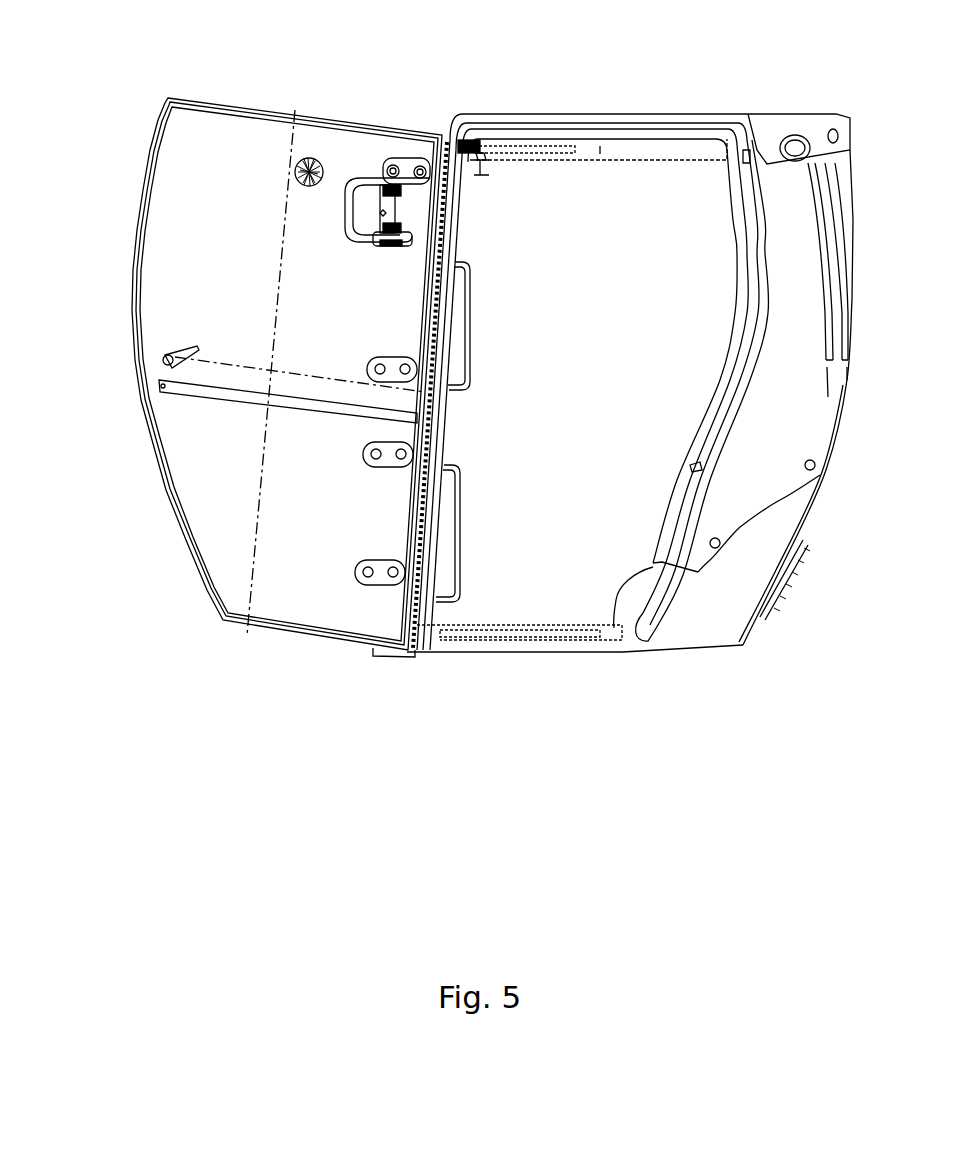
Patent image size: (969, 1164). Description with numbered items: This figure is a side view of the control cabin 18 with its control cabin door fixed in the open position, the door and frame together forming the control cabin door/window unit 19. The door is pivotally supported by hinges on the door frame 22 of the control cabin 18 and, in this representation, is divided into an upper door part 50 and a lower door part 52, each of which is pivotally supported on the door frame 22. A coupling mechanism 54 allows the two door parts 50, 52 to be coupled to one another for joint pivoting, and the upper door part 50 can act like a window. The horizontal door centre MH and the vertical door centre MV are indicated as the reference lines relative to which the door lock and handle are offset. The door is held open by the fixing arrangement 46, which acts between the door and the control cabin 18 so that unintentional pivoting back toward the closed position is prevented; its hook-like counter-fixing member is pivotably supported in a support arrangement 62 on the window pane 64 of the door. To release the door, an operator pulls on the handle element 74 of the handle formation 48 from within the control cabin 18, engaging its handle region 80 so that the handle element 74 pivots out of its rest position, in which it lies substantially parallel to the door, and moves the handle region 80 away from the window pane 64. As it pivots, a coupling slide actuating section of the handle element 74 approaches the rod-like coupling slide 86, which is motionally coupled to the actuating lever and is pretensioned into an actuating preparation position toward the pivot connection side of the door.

The control cabin 18 is at (767, 113).
The control cabin door/window unit 19 is at (167, 648).
The door frame 22 is at (614, 625).
The fixing arrangement 46 is at (318, 138).
The handle formation 48 is at (430, 207).
The upper door part 50 is at (160, 232).
The lower door part 52 is at (207, 520).
The coupling mechanism 54 is at (241, 412).
The support arrangement 62 is at (301, 158).
The window pane 64 is at (203, 140).
The handle element 74 is at (367, 242).
The handle region 80 is at (345, 210).
The coupling slide 86 is at (347, 170).
The horizontal door centre MH is at (250, 604).
The vertical door centre MV is at (152, 370).